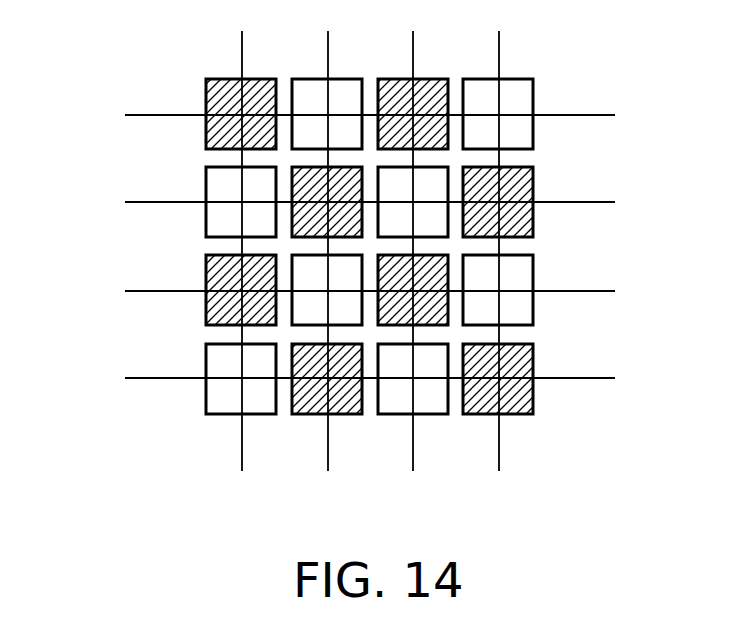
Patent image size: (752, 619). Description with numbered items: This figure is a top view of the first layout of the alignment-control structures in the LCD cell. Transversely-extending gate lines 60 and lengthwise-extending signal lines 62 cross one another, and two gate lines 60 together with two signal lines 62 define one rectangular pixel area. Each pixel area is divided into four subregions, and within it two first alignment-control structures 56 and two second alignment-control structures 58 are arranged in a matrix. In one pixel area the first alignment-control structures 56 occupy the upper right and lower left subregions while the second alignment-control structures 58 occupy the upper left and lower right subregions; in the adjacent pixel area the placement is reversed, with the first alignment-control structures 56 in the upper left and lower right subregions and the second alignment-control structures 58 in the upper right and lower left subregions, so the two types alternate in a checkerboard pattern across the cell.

The first alignment-control structure 56 is at (223, 187).
The second alignment-control structure 58 is at (222, 87).
The gate line 60 is at (588, 115).
The signal line 62 is at (242, 41).